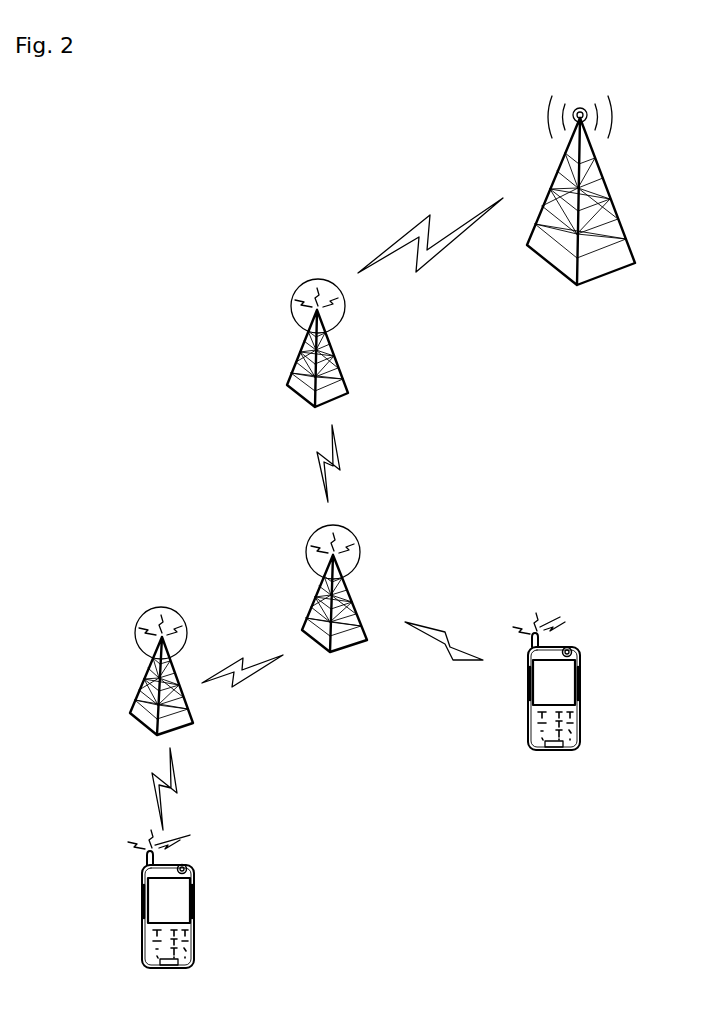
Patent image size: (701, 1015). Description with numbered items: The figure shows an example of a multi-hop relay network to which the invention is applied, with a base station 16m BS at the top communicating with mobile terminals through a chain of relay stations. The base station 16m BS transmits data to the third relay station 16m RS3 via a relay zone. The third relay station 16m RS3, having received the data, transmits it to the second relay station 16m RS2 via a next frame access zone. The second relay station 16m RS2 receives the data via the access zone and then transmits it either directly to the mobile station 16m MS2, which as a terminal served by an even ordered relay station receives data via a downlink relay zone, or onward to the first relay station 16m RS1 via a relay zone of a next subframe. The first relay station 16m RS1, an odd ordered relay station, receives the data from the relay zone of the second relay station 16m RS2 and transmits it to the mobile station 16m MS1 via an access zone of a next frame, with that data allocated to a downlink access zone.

The base station 16m BS is at (581, 211).
The third relay station 16m RS3 is at (269, 343).
The second relay station 16m RS2 is at (334, 604).
The first relay station 16m RS1 is at (112, 671).
The mobile station 16m MS1 is at (210, 899).
The mobile station 16m MS2 is at (555, 696).